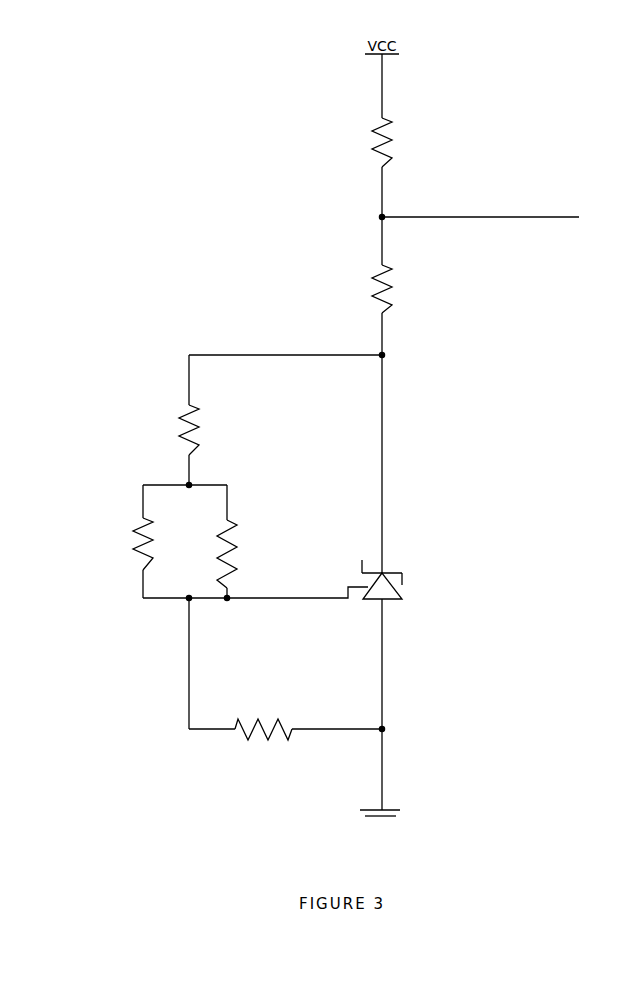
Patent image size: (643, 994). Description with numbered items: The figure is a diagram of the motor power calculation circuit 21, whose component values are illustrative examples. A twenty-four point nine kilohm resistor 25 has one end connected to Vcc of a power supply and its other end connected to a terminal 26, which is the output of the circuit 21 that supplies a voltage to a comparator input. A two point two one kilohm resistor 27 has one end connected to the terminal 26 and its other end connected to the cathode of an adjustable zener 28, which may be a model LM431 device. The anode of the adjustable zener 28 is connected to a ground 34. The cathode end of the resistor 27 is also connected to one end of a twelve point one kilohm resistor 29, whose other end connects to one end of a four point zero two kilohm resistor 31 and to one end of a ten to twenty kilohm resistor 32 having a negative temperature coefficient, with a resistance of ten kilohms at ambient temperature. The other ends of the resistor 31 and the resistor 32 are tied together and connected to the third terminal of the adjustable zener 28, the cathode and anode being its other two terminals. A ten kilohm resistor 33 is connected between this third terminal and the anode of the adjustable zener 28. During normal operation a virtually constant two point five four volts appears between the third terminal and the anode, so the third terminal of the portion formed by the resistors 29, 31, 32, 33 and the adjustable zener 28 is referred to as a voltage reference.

The motor power calculation circuit 21 is at (534, 367).
The 24.9K ohm resistor 25 is at (387, 115).
The terminal 26 is at (387, 215).
The 2.21K ohm resistor 27 is at (382, 290).
The adjustable zener 28 is at (395, 593).
The 12.1K ohm resistor 29 is at (189, 405).
The 4.02K ohm resistor 31 is at (143, 520).
The 10K to 20K ohm NTC resistor 32 is at (237, 520).
The 10K ohm resistor 33 is at (290, 730).
The ground 34 is at (400, 818).